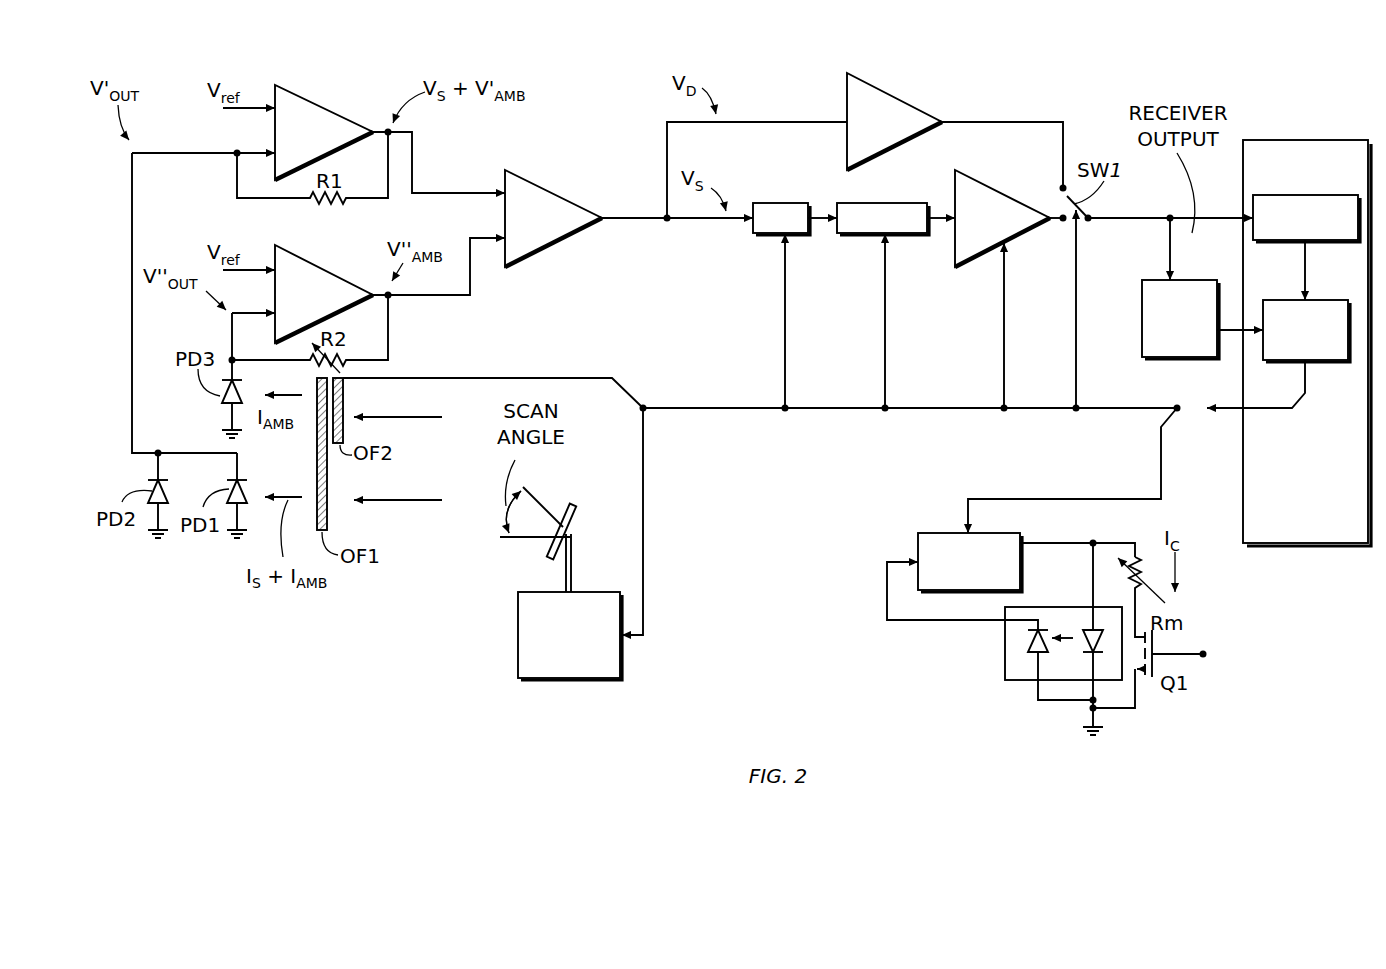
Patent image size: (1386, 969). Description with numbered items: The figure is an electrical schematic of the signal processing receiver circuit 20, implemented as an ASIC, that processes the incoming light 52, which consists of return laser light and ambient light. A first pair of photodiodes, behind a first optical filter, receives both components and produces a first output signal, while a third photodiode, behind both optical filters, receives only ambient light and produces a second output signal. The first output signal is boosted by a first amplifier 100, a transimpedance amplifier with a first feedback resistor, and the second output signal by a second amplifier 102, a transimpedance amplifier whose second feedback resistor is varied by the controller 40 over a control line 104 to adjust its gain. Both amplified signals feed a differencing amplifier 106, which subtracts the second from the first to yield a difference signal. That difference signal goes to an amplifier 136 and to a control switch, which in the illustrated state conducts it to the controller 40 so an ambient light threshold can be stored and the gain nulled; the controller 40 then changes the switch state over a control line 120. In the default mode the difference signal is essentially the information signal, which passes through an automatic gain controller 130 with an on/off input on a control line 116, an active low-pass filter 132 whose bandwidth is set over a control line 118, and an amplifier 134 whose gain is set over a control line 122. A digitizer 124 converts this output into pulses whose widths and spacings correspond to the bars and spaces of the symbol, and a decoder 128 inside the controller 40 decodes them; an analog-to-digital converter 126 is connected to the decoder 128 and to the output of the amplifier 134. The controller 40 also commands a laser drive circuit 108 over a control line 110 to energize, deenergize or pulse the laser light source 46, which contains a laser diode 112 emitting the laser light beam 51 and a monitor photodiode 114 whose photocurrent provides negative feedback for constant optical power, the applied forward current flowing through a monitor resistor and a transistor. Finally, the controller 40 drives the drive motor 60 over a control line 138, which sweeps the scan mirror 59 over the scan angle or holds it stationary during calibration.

The signal processing receiver circuit 20 is at (1089, 77).
The controller 40 is at (1305, 140).
The laser light source 46 is at (1003, 667).
The laser light beam 51 is at (1070, 636).
The incoming light 52 is at (420, 418).
The scan mirror 59 is at (575, 513).
The drive motor 60 is at (572, 680).
The first amplifier 100 is at (327, 108).
The second amplifier 102 is at (334, 270).
The control line 104 is at (503, 378).
The differencing amplifier 106 is at (555, 192).
The laser drive circuit 108 is at (937, 532).
The control line 110 is at (1161, 453).
The laser diode 112 is at (1087, 645).
The monitor photodiode 114 is at (1028, 641).
The control line 116 is at (784, 382).
The control line 118 is at (886, 373).
The control line 120 is at (1077, 348).
The control line 122 is at (1005, 373).
The digitizer 124 is at (1193, 358).
The analog-to-digital converter 126 is at (1300, 195).
The decoder 128 is at (1320, 362).
The automatic gain controller 130 is at (775, 202).
The active low-pass filter 132 is at (905, 202).
The amplifier 134 is at (1003, 191).
The amplifier 136 is at (899, 100).
The control line 138 is at (645, 578).